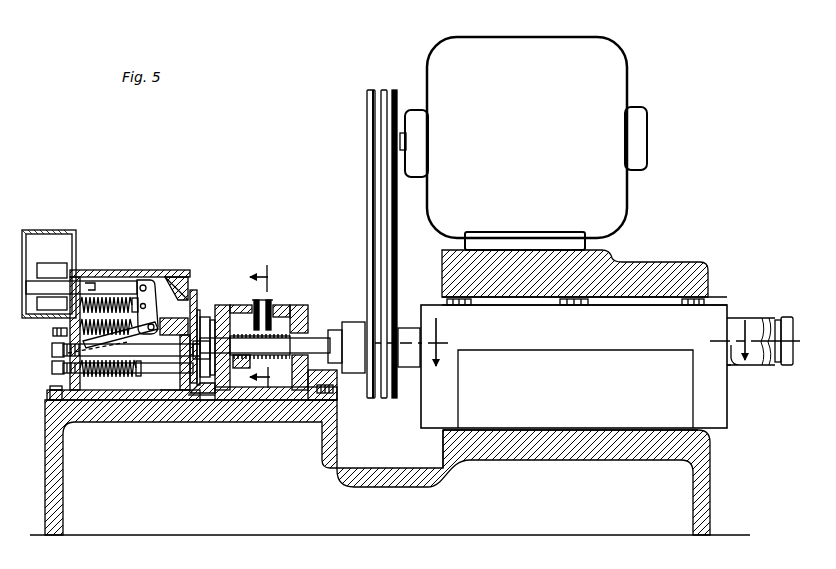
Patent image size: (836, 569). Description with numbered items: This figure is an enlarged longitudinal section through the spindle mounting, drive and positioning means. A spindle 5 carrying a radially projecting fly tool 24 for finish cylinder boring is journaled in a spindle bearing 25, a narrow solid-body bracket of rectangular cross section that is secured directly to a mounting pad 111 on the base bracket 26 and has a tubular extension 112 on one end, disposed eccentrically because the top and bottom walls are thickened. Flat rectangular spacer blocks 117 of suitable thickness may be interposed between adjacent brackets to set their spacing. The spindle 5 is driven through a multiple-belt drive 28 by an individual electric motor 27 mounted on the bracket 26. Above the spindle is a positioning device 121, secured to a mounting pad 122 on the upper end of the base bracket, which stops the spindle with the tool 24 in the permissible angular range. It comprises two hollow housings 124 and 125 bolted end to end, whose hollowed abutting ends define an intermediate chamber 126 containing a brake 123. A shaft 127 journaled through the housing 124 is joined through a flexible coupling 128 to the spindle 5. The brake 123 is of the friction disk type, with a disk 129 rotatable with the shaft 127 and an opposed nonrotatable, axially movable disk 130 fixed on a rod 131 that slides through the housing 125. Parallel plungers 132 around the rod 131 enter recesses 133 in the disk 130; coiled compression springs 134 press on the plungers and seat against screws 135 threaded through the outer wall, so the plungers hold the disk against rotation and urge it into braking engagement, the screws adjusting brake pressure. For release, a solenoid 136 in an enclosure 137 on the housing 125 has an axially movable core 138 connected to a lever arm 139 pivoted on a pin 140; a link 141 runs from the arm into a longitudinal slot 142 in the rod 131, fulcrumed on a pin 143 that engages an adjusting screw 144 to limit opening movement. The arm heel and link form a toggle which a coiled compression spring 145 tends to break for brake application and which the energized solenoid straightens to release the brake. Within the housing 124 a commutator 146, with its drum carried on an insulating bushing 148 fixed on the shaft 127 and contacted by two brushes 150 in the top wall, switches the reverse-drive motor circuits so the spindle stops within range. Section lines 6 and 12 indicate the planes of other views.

The spindle 5 is at (778, 330).
The section line 6- 6 is at (268, 326).
The section line 12- 12 is at (576, 331).
The fly tool 24 is at (787, 317).
The spindle bearing 25 is at (715, 404).
The base bracket 26 is at (710, 470).
The electric motor 27 is at (448, 57).
The multiple-belt drive 28 is at (390, 232).
The mounting pad 111 is at (598, 447).
The tubular extension 112 is at (753, 362).
The spacer block 117 is at (510, 417).
The positioning device 121 is at (166, 256).
The mounting pad 122 is at (190, 396).
The brake 123 is at (196, 398).
The hollow housing 124 is at (306, 320).
The hollow housing 125 is at (180, 272).
The intermediate chamber 126 is at (180, 400).
The shaft 127 is at (320, 334).
The flexible coupling 128 is at (355, 370).
The disk 129 is at (210, 327).
The disk 130 is at (203, 395).
The rod 131 is at (159, 357).
The plunger 132 is at (167, 393).
The recess 133 is at (195, 312).
The coiled compression spring 134 is at (102, 380).
The screw 135 is at (52, 366).
The solenoid 136 is at (50, 270).
The enclosure 137 is at (38, 232).
The core 138 is at (85, 282).
The lever arm 139 is at (192, 300).
The pin 140 is at (193, 320).
The link 141 is at (130, 296).
The longitudinal slot 142 is at (110, 379).
The pin 143 is at (53, 333).
The screw 144 is at (52, 348).
The coiled compression spring 145 is at (112, 296).
The commutator 146 is at (285, 320).
The insulating bushing 148 is at (282, 371).
The electrical contact brush 150 is at (262, 298).